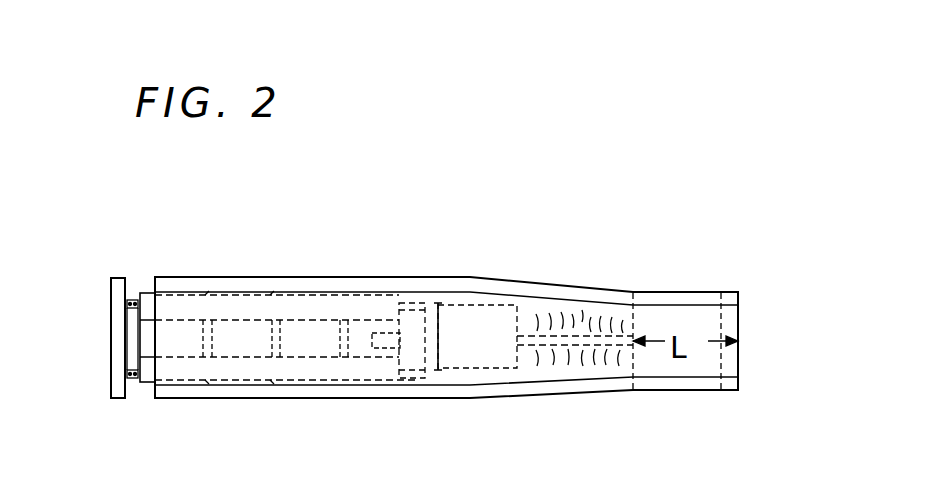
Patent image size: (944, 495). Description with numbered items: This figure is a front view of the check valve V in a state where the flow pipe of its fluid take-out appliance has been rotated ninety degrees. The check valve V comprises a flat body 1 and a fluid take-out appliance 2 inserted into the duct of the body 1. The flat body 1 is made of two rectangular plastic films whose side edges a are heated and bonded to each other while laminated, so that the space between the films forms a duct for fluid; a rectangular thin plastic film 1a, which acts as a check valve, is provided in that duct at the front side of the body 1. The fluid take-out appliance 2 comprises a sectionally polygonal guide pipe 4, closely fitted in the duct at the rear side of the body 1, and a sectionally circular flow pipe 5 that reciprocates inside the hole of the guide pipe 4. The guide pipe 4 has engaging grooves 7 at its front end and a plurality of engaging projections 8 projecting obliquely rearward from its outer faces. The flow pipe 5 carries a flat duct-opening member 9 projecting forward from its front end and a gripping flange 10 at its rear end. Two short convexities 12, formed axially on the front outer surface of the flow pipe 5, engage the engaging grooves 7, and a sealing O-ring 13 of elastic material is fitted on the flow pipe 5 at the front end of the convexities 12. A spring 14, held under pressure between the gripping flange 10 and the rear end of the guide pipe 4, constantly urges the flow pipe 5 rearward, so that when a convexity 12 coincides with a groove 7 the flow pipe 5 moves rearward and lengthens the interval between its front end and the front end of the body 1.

The flat body 1 is at (262, 275).
The rectangular thin plastic film 1a is at (703, 320).
The fluid take-out appliance 2 is at (482, 366).
The guide pipe 4 is at (302, 365).
The flow pipe 5 is at (130, 330).
The engaging groove 7 is at (383, 345).
The engaging projection 8 is at (270, 342).
The duct-opening member 9 is at (575, 320).
The gripping flange 10 is at (118, 357).
The convexity 12 is at (418, 300).
The sealing O-ring 13 is at (440, 332).
The spring 14 is at (132, 380).
The side edge a is at (362, 288).
The check valve V is at (230, 260).